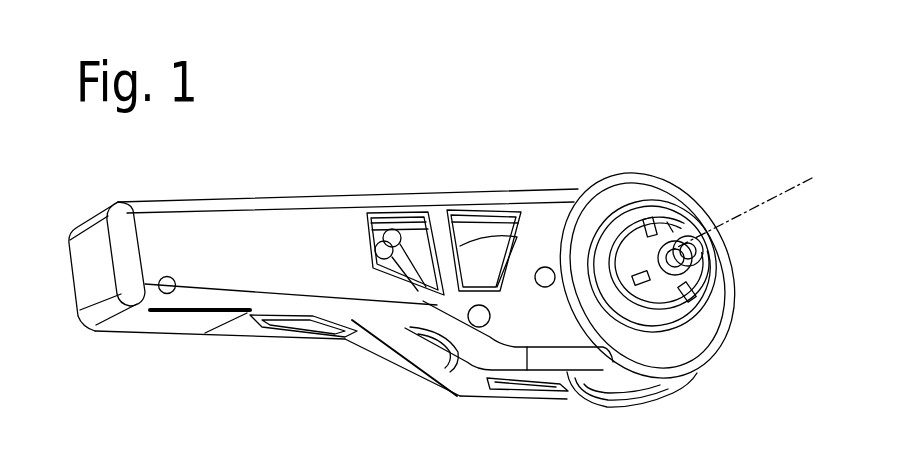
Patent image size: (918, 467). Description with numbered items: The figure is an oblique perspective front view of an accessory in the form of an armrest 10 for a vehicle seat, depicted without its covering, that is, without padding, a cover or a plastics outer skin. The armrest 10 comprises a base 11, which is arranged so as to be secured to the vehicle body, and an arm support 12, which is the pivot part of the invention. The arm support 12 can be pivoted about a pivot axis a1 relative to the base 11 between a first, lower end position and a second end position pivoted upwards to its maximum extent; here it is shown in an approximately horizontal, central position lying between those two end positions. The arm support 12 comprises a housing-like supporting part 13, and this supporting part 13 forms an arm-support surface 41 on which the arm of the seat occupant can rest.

The armrest 10 is at (440, 217).
The base 11 is at (684, 212).
The arm support 12 is at (258, 232).
The supporting part 13 is at (253, 270).
The arm-support surface 41 is at (418, 160).
The pivot axis a1 is at (750, 205).